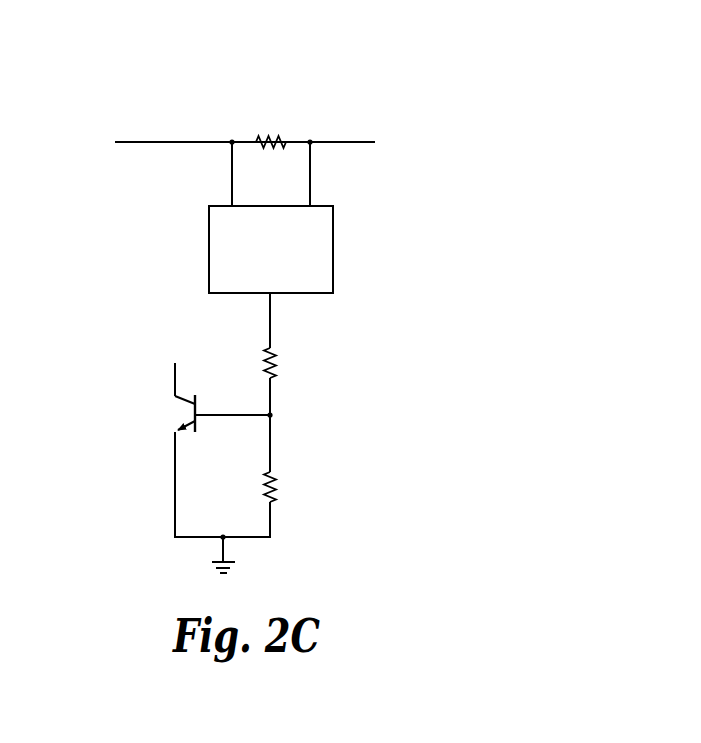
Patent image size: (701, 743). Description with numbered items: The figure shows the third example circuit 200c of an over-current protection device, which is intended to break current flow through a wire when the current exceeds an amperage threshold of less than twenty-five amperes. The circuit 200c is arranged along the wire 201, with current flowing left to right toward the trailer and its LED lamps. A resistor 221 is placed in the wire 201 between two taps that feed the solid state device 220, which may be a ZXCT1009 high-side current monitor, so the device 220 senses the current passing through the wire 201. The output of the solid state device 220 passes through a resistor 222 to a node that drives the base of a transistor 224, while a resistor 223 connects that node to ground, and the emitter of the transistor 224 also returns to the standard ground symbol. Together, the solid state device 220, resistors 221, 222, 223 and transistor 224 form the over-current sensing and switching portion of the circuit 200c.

The circuit 200c is at (189, 79).
The wire 201 is at (131, 142).
The solid state device 220 is at (287, 264).
The resistor 221 is at (270, 128).
The resistor 222 is at (290, 359).
The resistor 223 is at (295, 487).
The transistor 224 is at (181, 414).